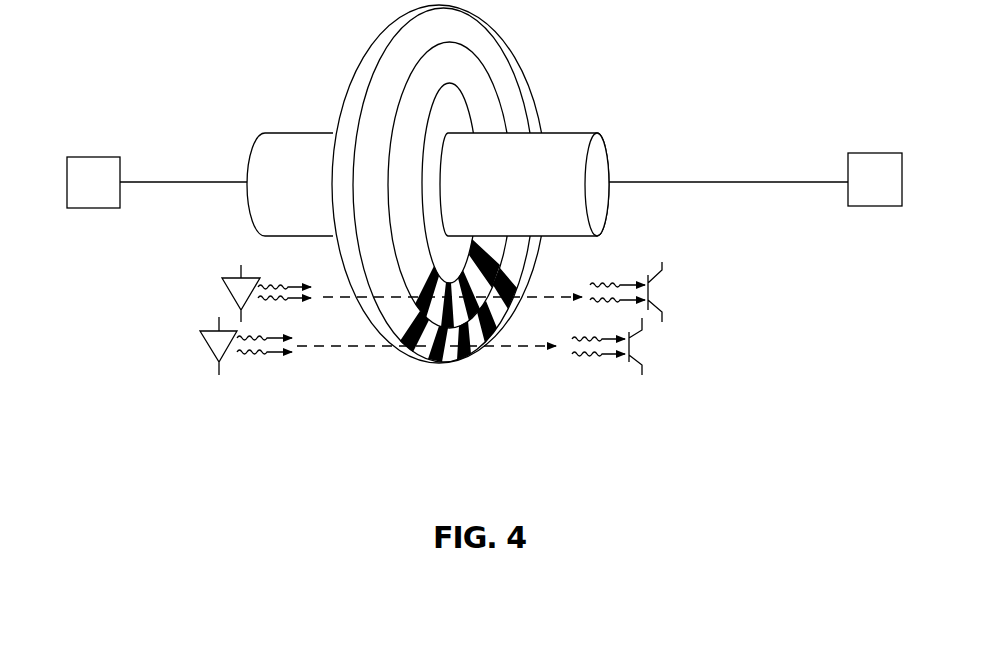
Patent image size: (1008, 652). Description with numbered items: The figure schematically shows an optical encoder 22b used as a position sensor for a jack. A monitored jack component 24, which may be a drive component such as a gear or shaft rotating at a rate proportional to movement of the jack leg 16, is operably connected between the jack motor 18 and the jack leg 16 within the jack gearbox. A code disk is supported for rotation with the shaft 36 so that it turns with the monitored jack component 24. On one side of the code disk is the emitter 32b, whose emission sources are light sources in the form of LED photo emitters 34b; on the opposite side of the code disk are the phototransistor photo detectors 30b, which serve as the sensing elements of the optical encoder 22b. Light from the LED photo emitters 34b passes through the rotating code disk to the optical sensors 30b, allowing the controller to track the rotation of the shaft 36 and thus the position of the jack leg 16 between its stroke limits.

The jack leg 16 is at (872, 192).
The jack motor 18 is at (80, 198).
The optical encoder 22b is at (377, 373).
The monitored jack component 24 is at (545, 148).
The shaft 36 is at (533, 168).
The phototransistor photo detectors 30b is at (662, 311).
The emitter 32b is at (173, 320).
The LED photo emitters 34b is at (222, 278).